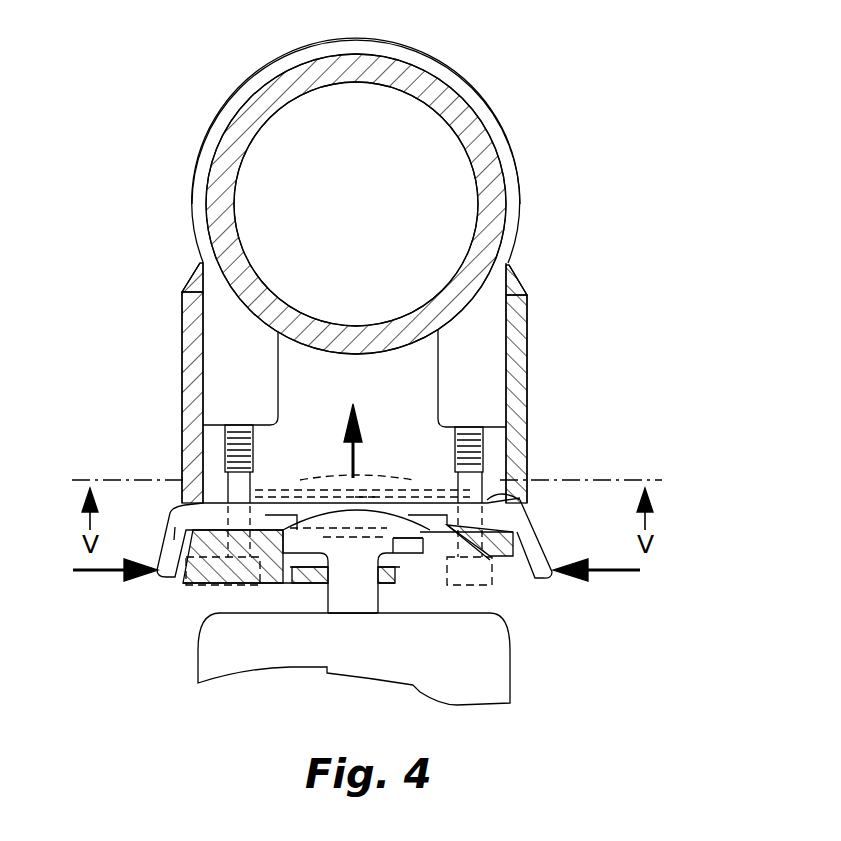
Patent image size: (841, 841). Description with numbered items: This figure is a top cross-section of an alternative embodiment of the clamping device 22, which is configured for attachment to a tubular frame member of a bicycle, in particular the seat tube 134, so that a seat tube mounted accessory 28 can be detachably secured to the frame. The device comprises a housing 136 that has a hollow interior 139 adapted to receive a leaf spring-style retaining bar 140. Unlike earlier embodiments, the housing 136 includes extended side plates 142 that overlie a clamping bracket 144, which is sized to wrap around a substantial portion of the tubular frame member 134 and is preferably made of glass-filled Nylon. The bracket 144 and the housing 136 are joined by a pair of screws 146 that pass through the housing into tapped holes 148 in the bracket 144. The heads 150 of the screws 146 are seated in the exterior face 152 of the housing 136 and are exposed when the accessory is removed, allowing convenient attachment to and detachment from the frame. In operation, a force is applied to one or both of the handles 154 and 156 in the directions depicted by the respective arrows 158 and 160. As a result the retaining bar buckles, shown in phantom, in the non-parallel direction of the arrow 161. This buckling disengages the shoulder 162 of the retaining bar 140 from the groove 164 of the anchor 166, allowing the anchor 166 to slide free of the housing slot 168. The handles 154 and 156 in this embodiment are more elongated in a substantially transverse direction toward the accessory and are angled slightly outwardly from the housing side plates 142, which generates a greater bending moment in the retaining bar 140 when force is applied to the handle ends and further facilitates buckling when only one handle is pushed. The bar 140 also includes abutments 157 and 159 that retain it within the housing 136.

The clamping device 22 is at (600, 210).
The seat tube mounted accessory 28 is at (375, 674).
The seat tube 134 is at (490, 110).
The housing 136 is at (538, 336).
The hollow interior 139 is at (257, 410).
The retaining bar 140 is at (330, 452).
The extended side plates 142 is at (193, 273).
The clamping bracket 144 is at (508, 177).
The screws 146 is at (253, 437).
The tapped holes 148 is at (228, 430).
The heads of the screws 150 is at (238, 588).
The exterior face 152 is at (279, 592).
The handle 154 is at (166, 579).
The handle 156 is at (545, 548).
The abutment 157 is at (192, 498).
The arrow 158 is at (113, 573).
The abutment 159 is at (520, 497).
The arrow 160 is at (592, 573).
The arrow 161 is at (355, 452).
The shoulder 162 is at (366, 495).
The groove 164 is at (388, 533).
The anchor 166 is at (350, 592).
The housing slot 168 is at (410, 562).